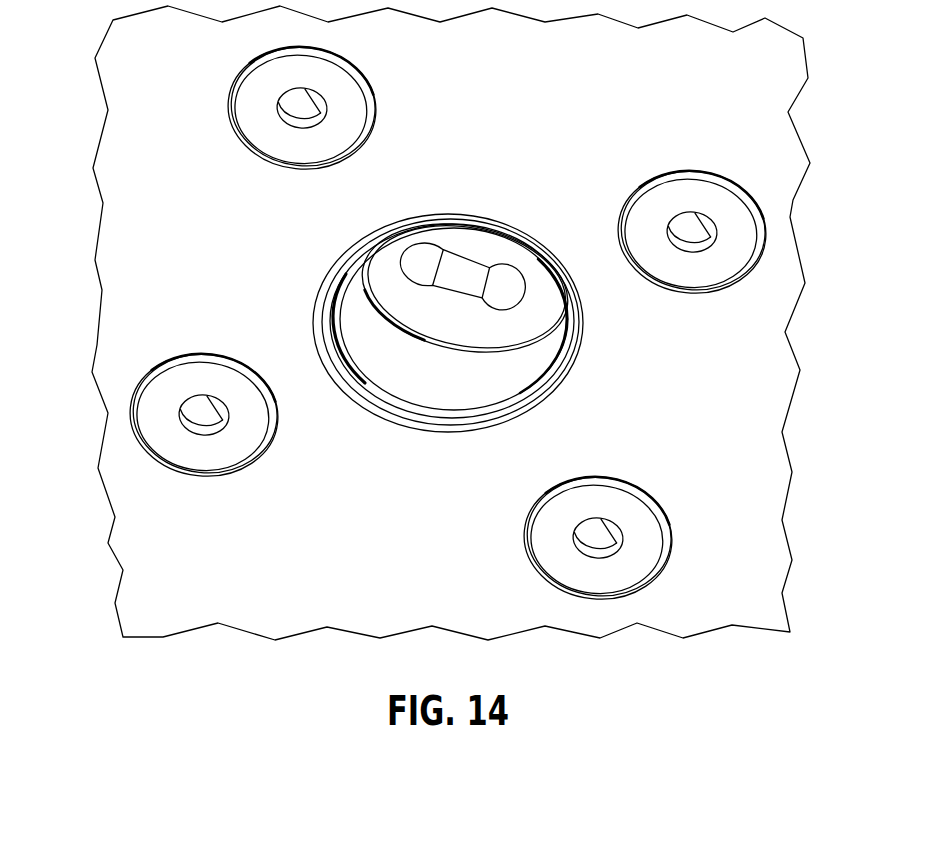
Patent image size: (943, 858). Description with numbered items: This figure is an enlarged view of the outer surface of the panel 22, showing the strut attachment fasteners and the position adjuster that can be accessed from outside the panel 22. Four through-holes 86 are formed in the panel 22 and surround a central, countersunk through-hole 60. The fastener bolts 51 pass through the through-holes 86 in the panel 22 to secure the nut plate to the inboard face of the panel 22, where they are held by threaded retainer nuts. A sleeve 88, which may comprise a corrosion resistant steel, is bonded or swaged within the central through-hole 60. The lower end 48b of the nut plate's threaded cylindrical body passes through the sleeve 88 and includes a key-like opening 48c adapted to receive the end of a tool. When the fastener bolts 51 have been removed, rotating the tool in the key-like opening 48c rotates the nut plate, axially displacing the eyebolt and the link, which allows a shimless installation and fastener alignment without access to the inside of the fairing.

The panel 22 is at (747, 445).
The through-holes 86 is at (226, 82).
The fastener bolts 51 is at (277, 133).
The central countersunk through-hole 60 is at (437, 435).
The sleeve 88 is at (357, 285).
The lower end 48b is at (452, 233).
The key-like opening 48c is at (518, 290).